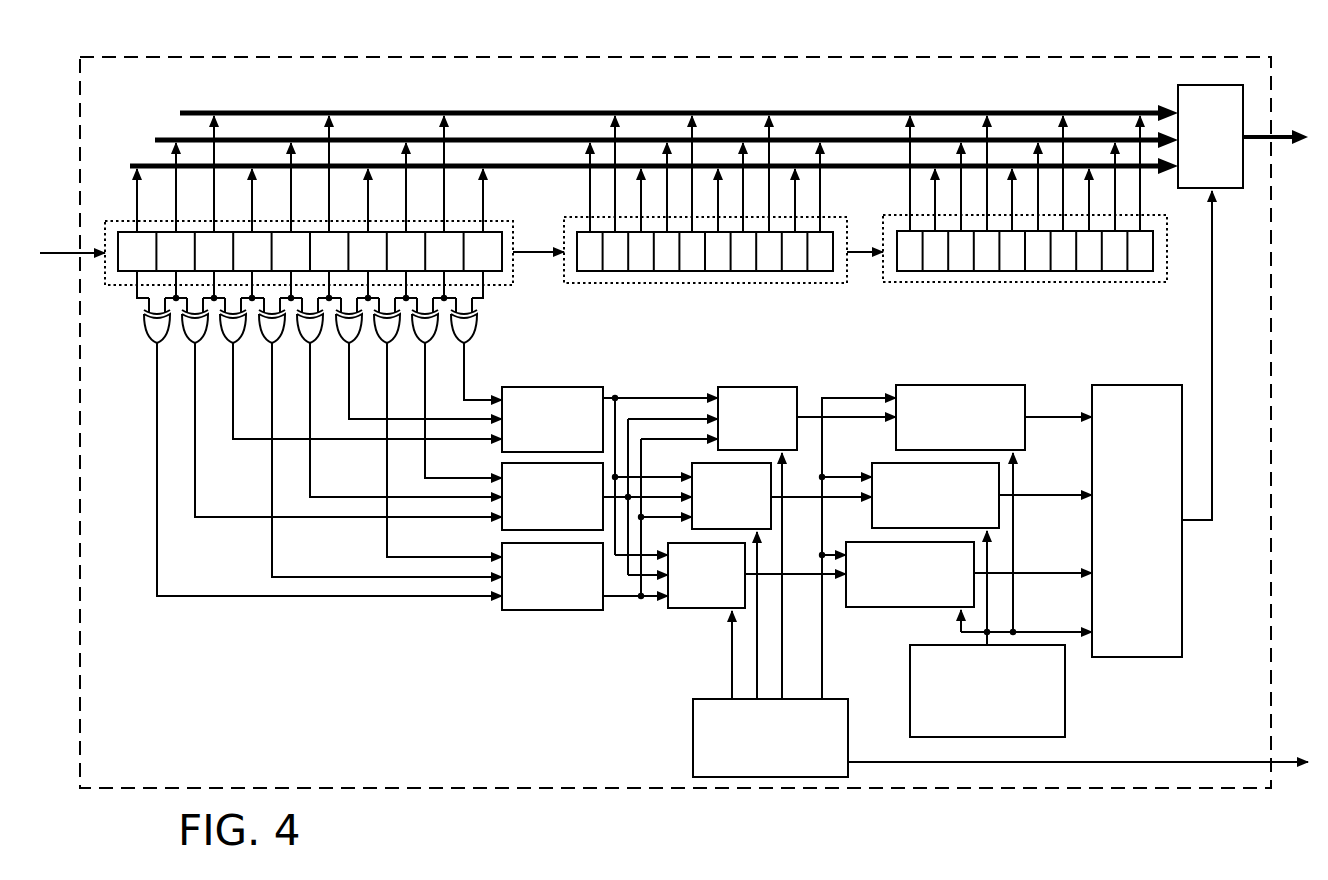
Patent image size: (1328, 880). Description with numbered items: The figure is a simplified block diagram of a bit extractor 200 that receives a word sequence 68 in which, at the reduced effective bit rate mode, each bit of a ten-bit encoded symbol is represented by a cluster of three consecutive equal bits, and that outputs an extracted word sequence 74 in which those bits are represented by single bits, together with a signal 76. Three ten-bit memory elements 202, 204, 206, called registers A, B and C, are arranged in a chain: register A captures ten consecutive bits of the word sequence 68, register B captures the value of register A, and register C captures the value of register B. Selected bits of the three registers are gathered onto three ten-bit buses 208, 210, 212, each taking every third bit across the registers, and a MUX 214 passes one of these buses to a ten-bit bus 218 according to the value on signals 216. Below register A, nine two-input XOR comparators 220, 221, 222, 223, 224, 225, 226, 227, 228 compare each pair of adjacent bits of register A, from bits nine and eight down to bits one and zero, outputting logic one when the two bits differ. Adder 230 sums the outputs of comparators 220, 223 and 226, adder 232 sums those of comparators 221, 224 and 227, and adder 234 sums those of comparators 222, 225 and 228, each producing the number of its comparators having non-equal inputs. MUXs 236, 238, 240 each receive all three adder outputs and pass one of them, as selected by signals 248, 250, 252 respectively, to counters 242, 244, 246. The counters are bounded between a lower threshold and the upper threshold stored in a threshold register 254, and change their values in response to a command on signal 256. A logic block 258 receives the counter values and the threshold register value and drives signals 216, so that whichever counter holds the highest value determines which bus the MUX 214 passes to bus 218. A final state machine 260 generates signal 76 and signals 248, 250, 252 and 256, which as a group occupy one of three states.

The bit extractor 200 is at (303, 94).
The word sequence 68 is at (65, 257).
The extracted word sequence 74 is at (1280, 136).
The signal 76 is at (1282, 761).
The memory element 202 is at (509, 285).
The memory element 204 is at (632, 283).
The memory element 206 is at (925, 282).
The 10-bit bus 208 is at (845, 169).
The 10-bit bus 210 is at (522, 137).
The 10-bit bus 212 is at (860, 111).
The MUX 214 is at (1191, 165).
The signals 216 is at (1211, 291).
The 10-bit bus 218 is at (1243, 189).
The comparator 220 is at (150, 335).
The comparator 221 is at (188, 335).
The comparator 222 is at (226, 335).
The comparator 223 is at (265, 335).
The comparator 224 is at (303, 335).
The comparator 225 is at (342, 335).
The comparator 226 is at (380, 335).
The comparator 227 is at (418, 335).
The comparator 228 is at (457, 335).
The adder 230 is at (533, 600).
The adder 232 is at (533, 520).
The adder 234 is at (533, 443).
The MUX 236 is at (687, 600).
The MUX 238 is at (712, 520).
The MUX 240 is at (738, 443).
The counter 242 is at (891, 598).
The counter 244 is at (916, 519).
The counter 246 is at (941, 441).
The signal 248 is at (731, 619).
The signal 250 is at (756, 645).
The signal 252 is at (781, 672).
The threshold register 254 is at (968, 729).
The signal 256 is at (823, 628).
The logic block 258 is at (1118, 558).
The final state machine 260 is at (751, 760).